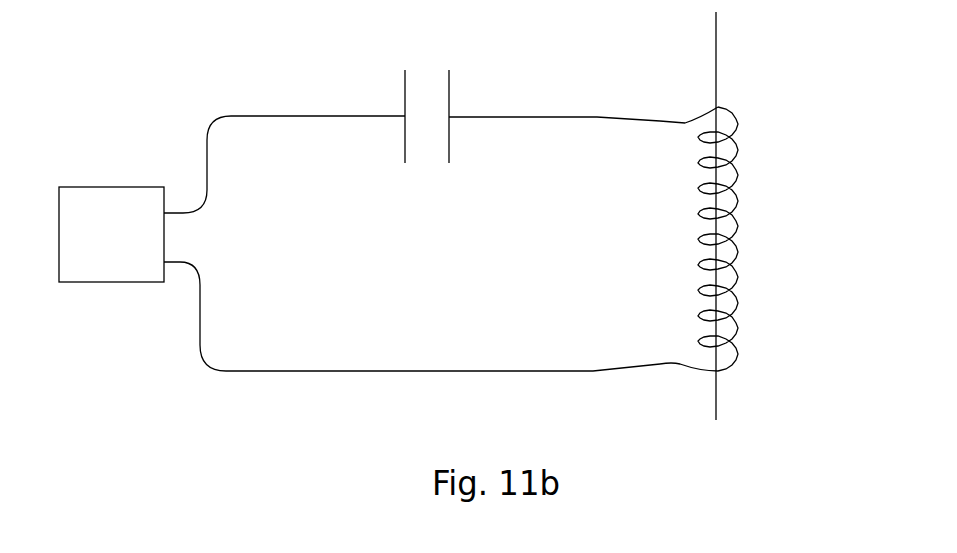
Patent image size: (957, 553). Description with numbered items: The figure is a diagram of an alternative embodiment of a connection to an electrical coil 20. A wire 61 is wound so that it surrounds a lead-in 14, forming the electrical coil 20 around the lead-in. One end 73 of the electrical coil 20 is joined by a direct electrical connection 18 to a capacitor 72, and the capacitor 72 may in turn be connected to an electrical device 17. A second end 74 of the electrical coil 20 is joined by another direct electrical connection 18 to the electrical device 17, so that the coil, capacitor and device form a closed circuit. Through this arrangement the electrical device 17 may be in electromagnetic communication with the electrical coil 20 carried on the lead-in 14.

The electrical device 17 is at (154, 217).
The direct electrical connection 18 is at (548, 116).
The capacitor 72 is at (426, 66).
The lead-in 14 is at (716, 80).
The wire 61 is at (754, 238).
The one end of electrical coil 73 is at (688, 125).
The second end of electrical coil 74 is at (684, 354).
The electrical coil 20 is at (762, 369).